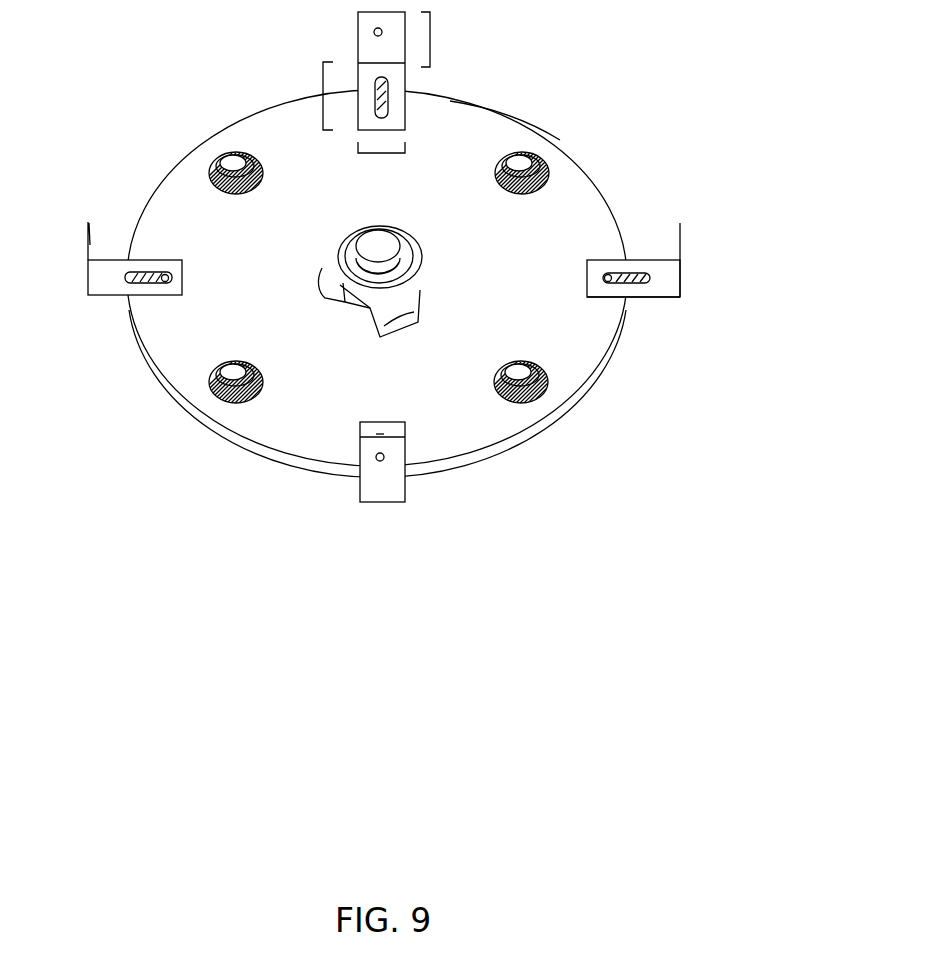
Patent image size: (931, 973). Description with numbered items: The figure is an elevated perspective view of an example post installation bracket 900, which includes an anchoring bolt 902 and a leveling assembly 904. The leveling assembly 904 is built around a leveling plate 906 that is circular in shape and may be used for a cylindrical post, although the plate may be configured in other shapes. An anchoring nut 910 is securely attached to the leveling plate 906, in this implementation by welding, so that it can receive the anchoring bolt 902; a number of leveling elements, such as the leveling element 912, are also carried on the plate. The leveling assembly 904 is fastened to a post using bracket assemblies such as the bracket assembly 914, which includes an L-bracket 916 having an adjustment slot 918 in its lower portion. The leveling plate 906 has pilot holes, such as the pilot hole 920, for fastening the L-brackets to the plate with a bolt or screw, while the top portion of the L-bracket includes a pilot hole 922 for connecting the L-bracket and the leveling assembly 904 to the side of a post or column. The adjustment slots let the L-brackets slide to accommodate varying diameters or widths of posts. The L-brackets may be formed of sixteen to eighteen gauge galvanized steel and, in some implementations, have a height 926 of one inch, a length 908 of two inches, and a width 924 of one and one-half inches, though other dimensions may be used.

The post installation bracket 900 is at (652, 828).
The anchoring bolt 902 is at (370, 252).
The leveling assembly 904 is at (178, 143).
The leveling plate 906 is at (470, 125).
The length 908 is at (389, 106).
The anchoring nut 910 is at (326, 266).
The leveling element 912 is at (206, 379).
The bracket assembly 914 is at (692, 307).
The L-bracket 916 is at (680, 250).
The adjustment slot 918 is at (633, 297).
The pilot hole 920 is at (612, 279).
The pilot hole 922 is at (383, 456).
The width 924 is at (380, 154).
The height 926 is at (433, 33).